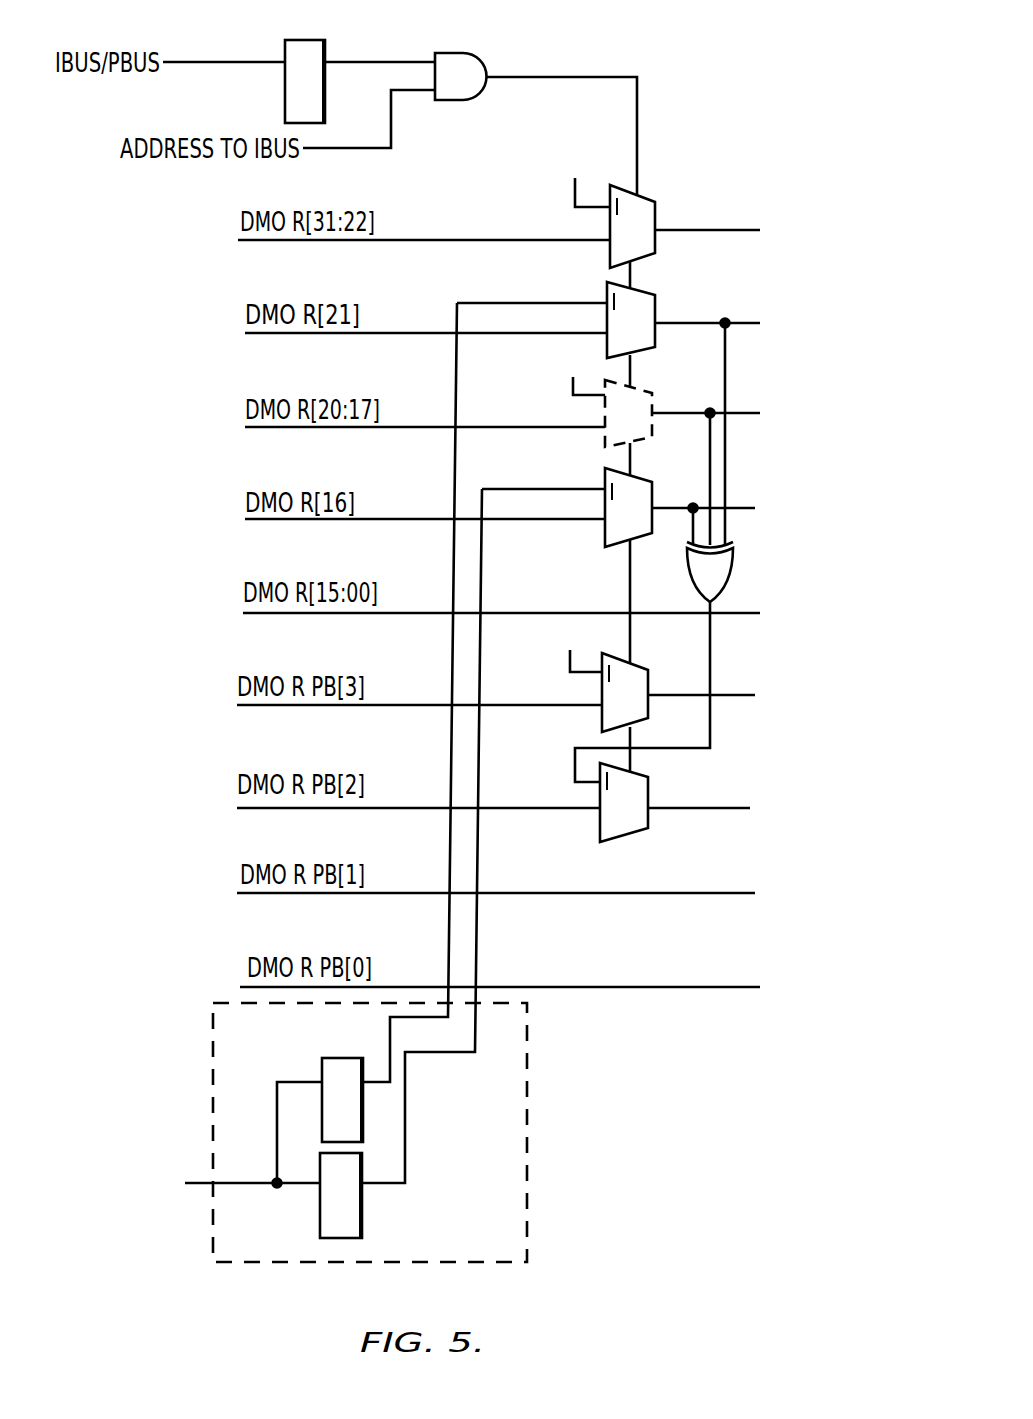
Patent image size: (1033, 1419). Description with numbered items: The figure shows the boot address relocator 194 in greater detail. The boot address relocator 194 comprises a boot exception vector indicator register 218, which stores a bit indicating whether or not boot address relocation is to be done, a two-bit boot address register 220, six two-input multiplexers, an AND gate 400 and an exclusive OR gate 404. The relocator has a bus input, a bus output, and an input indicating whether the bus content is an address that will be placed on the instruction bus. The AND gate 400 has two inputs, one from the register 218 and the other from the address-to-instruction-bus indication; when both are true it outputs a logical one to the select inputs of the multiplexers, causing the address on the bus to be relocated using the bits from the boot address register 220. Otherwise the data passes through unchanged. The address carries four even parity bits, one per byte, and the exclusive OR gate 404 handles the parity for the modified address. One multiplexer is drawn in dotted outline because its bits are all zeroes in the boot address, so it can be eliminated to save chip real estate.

The boot exception vector indicator register 218 is at (327, 97).
The AND gate 400 is at (472, 53).
The exclusive OR gate 404 is at (689, 569).
The boot address register 220 is at (527, 1048).
The boot address relocator 194 is at (856, 47).